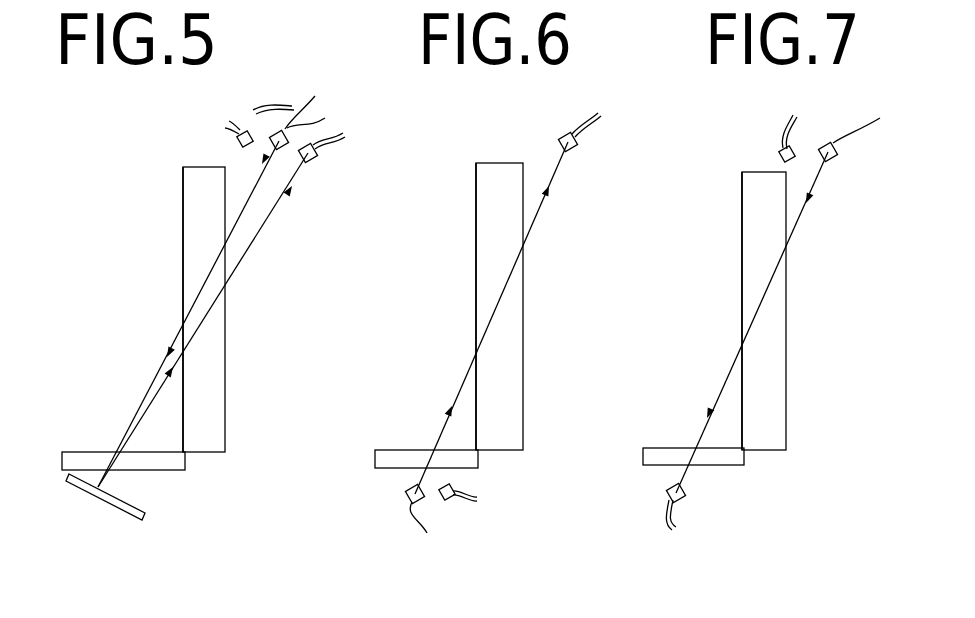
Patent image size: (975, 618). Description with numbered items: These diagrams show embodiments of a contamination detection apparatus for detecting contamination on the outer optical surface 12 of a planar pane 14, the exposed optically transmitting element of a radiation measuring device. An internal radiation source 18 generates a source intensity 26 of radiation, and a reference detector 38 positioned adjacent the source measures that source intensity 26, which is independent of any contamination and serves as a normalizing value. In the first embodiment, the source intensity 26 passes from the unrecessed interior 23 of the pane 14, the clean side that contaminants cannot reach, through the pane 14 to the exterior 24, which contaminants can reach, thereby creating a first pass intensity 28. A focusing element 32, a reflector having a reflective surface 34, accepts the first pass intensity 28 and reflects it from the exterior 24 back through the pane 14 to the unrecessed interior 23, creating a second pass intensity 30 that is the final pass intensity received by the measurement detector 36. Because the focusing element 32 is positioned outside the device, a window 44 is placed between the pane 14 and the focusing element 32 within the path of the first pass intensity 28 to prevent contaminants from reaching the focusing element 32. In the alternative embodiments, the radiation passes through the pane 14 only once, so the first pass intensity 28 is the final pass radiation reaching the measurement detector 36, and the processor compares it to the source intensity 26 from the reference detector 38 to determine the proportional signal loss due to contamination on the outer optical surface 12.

In FIG. 5, the outer optical surface 12 is at (181, 279).
In FIG. 6, the outer optical surface 12 is at (472, 250).
In FIG. 7, the outer optical surface 12 is at (738, 278).
In FIG. 5, the pane 14 is at (208, 420).
In FIG. 6, the pane 14 is at (498, 370).
In FIG. 7, the pane 14 is at (763, 392).
In FIG. 5, the internal radiation source 18 is at (297, 111).
In FIG. 6, the internal radiation source 18 is at (407, 490).
In FIG. 7, the internal radiation source 18 is at (835, 153).
In FIG. 5, the unrecessed interior 23 is at (290, 357).
In FIG. 6, the unrecessed interior 23 is at (590, 327).
In FIG. 7, the unrecessed interior 23 is at (861, 328).
In FIG. 5, the exterior 24 is at (102, 332).
In FIG. 6, the exterior 24 is at (418, 332).
In FIG. 7, the exterior 24 is at (708, 332).
In FIG. 5, the source intensity 26 is at (258, 162).
In FIG. 6, the source intensity 26 is at (455, 408).
In FIG. 7, the source intensity 26 is at (808, 202).
In FIG. 5, the first pass intensity 28 is at (165, 357).
In FIG. 6, the first pass intensity 28 is at (553, 183).
In FIG. 7, the first pass intensity 28 is at (706, 412).
In FIG. 5, the second pass intensity 30 is at (290, 188).
In FIG. 5, the focusing element 32 is at (146, 515).
In FIG. 5, the reflective surface 34 is at (142, 493).
In FIG. 5, the measurement detector 36 is at (315, 156).
In FIG. 6, the measurement detector 36 is at (577, 143).
In FIG. 7, the measurement detector 36 is at (683, 493).
In FIG. 5, the reference detector 38 is at (236, 136).
In FIG. 6, the reference detector 38 is at (448, 499).
In FIG. 7, the reference detector 38 is at (781, 155).
In FIG. 5, the window 44 is at (87, 452).
In FIG. 6, the window 44 is at (402, 450).
In FIG. 7, the window 44 is at (663, 448).